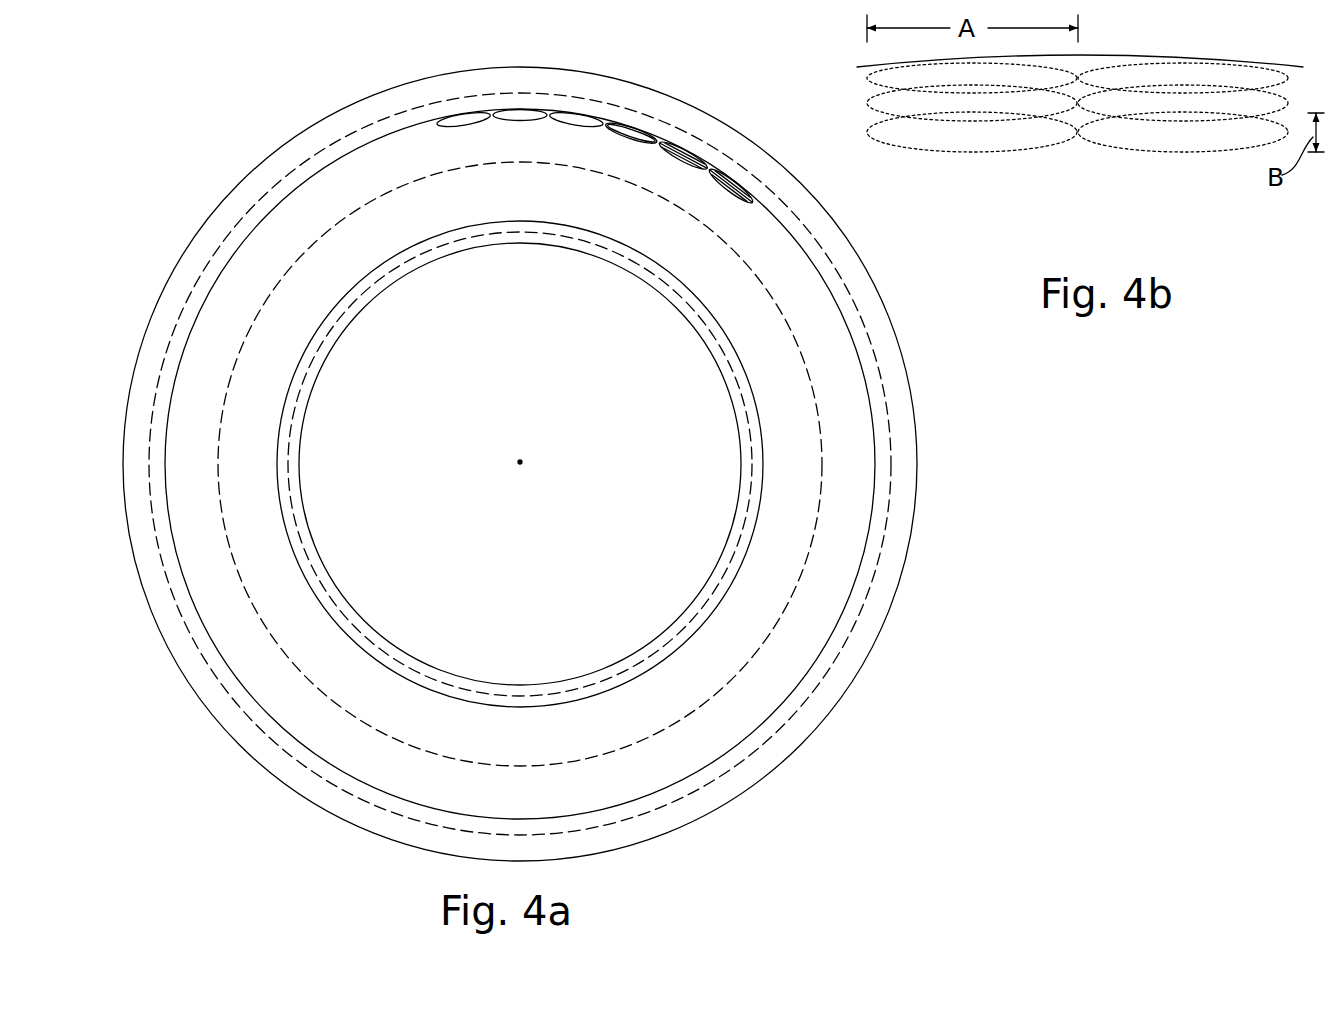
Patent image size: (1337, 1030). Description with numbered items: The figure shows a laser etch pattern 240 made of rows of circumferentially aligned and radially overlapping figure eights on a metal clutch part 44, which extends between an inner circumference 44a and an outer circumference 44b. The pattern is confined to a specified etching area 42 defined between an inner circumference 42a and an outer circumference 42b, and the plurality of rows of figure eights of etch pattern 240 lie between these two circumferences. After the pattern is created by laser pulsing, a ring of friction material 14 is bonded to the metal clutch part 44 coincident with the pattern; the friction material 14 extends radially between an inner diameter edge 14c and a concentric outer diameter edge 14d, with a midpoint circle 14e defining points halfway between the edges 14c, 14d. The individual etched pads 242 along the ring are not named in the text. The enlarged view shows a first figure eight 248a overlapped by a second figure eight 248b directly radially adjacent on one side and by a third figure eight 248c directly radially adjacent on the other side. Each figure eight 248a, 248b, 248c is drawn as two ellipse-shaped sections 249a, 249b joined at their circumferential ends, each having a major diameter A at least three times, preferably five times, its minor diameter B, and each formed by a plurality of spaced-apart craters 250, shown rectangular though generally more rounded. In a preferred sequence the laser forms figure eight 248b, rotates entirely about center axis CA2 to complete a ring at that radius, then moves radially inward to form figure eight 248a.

In FIG. 4A, the friction material 14 is at (845, 615).
In FIG. 4A, the inner diameter edge 14c is at (318, 333).
In FIG. 4A, the outer diameter edge 14d is at (287, 197).
In FIG. 4A, the midpoint circle 14e is at (292, 263).
In FIG. 4A, the specified etching area 42 is at (185, 288).
In FIG. 4A, the inner circumference 42a is at (402, 265).
In FIG. 4A, the outer circumference 42b is at (327, 145).
In FIG. 4B, the outer circumference 42b is at (1287, 67).
In FIG. 4A, the metal clutch part 44 is at (850, 687).
In FIG. 4A, the inner circumference 44a is at (363, 308).
In FIG. 4A, the outer circumference 44b is at (383, 90).
In FIG. 4A, the etch pattern 240 is at (727, 205).
In FIG. 4A, the pads 242 is at (463, 123).
In FIG. 4A, the center axis CA2 is at (520, 464).
In FIG. 4B, the first figure eight 248a is at (860, 102).
In FIG. 4B, the second figure eight 248b is at (860, 77).
In FIG. 4B, the third figure eight 248c is at (860, 127).
In FIG. 4B, the section 249a is at (1010, 162).
In FIG. 4B, the section 249b is at (1217, 168).
In FIG. 4B, the craters 250 is at (905, 150).